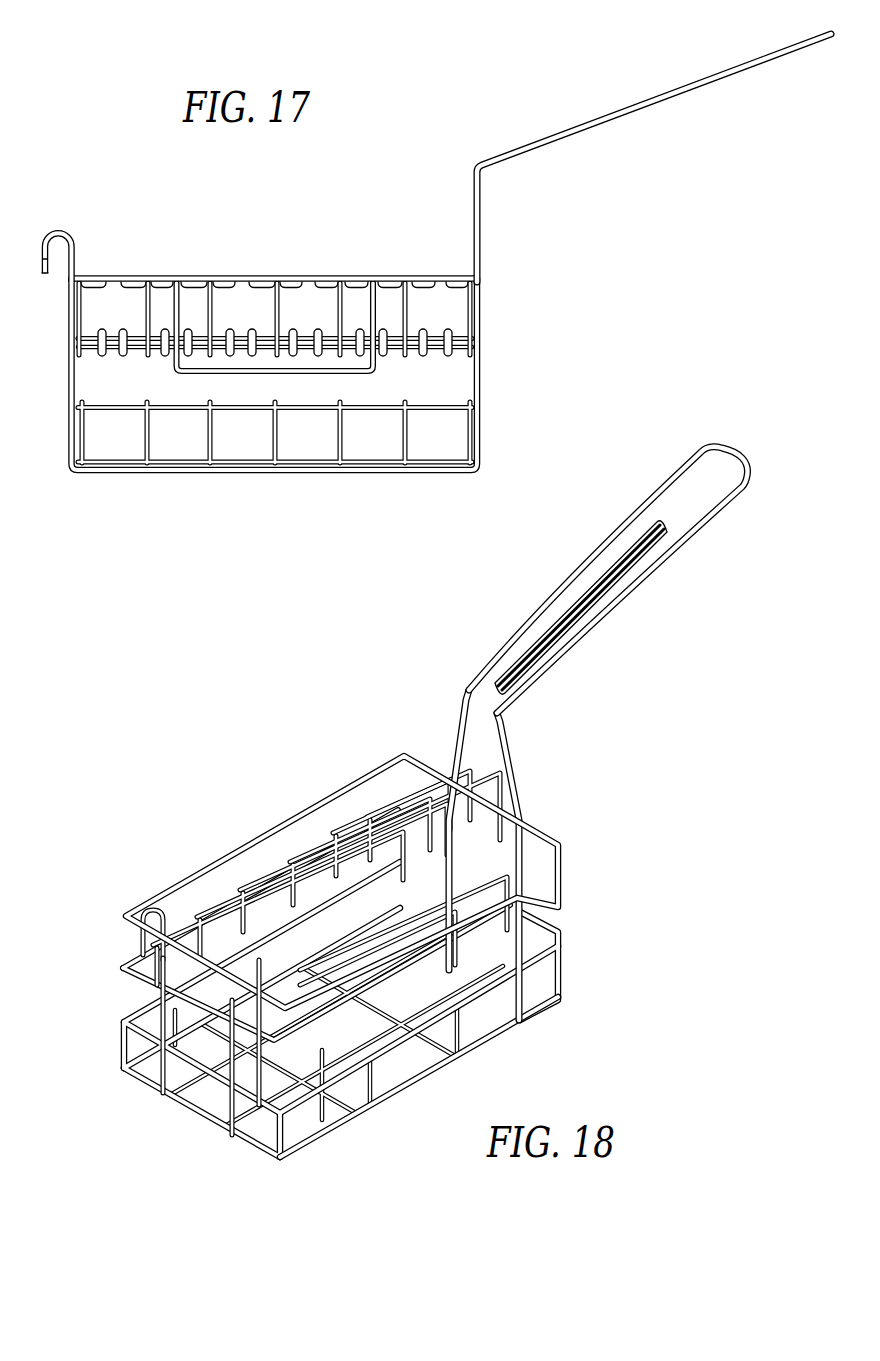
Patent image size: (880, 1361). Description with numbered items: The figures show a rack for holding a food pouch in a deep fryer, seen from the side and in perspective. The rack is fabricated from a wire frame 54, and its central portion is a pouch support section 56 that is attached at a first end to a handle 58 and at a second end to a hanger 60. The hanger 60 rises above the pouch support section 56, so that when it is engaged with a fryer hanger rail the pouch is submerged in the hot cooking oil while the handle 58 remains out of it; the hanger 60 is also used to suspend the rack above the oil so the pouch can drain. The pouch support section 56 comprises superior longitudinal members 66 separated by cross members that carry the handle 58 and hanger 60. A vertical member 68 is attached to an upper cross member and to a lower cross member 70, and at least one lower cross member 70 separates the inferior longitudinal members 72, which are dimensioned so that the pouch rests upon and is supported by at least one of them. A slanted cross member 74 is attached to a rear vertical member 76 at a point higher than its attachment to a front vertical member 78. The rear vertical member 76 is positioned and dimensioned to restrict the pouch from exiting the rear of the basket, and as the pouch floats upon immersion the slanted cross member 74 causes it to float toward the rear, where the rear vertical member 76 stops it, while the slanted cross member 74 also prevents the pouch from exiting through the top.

In FIG. 18, the wire frame 54 is at (560, 958).
In FIG. 17, the pouch support section 56 is at (418, 370).
In FIG. 17, the handle 58 is at (727, 69).
In FIG. 17, the hanger 60 is at (60, 228).
In FIG. 18, the superior longitudinal members 66 is at (303, 810).
In FIG. 18, the vertical member 68 is at (222, 1101).
In FIG. 18, the lower cross member 70 is at (259, 1100).
In FIG. 18, the inferior longitudinal members 72 is at (355, 1117).
In FIG. 17, the slanted cross member 74 is at (135, 352).
In FIG. 17, the rear vertical member 76 is at (240, 337).
In FIG. 18, the rear vertical member 76 is at (127, 965).
In FIG. 18, the front vertical member 78 is at (452, 965).